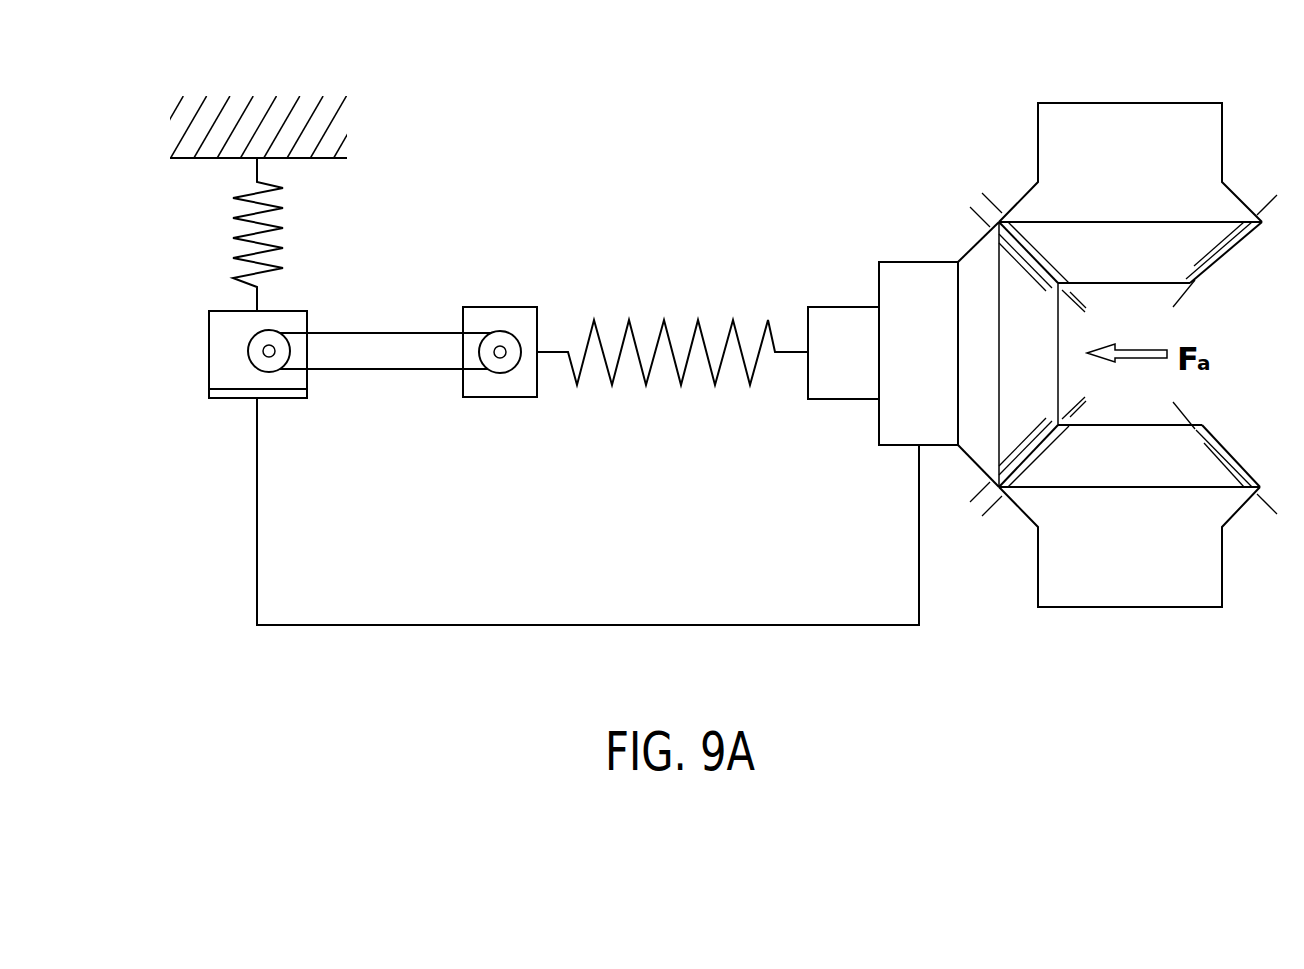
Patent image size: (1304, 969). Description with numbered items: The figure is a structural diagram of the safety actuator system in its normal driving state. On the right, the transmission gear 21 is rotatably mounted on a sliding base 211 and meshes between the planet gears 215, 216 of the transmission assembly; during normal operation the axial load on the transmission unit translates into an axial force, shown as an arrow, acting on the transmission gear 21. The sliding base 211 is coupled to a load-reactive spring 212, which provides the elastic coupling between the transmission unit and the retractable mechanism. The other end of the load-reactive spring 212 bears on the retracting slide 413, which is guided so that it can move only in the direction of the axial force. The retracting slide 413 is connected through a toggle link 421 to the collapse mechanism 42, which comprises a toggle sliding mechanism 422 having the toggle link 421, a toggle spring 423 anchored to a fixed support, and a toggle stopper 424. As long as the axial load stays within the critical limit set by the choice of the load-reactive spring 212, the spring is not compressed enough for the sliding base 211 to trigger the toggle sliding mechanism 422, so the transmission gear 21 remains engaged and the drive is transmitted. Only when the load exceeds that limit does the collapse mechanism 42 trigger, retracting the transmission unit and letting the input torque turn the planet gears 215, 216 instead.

The collapse mechanism 42 is at (104, 298).
The toggle link 421 is at (370, 353).
The toggle sliding mechanism 422 is at (228, 357).
The toggle spring 423 is at (233, 250).
The toggle stopper 424 is at (243, 393).
The retracting slide 413 is at (500, 315).
The load-reactive spring 212 is at (670, 340).
The sliding base 211 is at (915, 277).
The transmission gear 21 is at (977, 243).
The planet gear 215 is at (1130, 120).
The planet gear 216 is at (1233, 457).